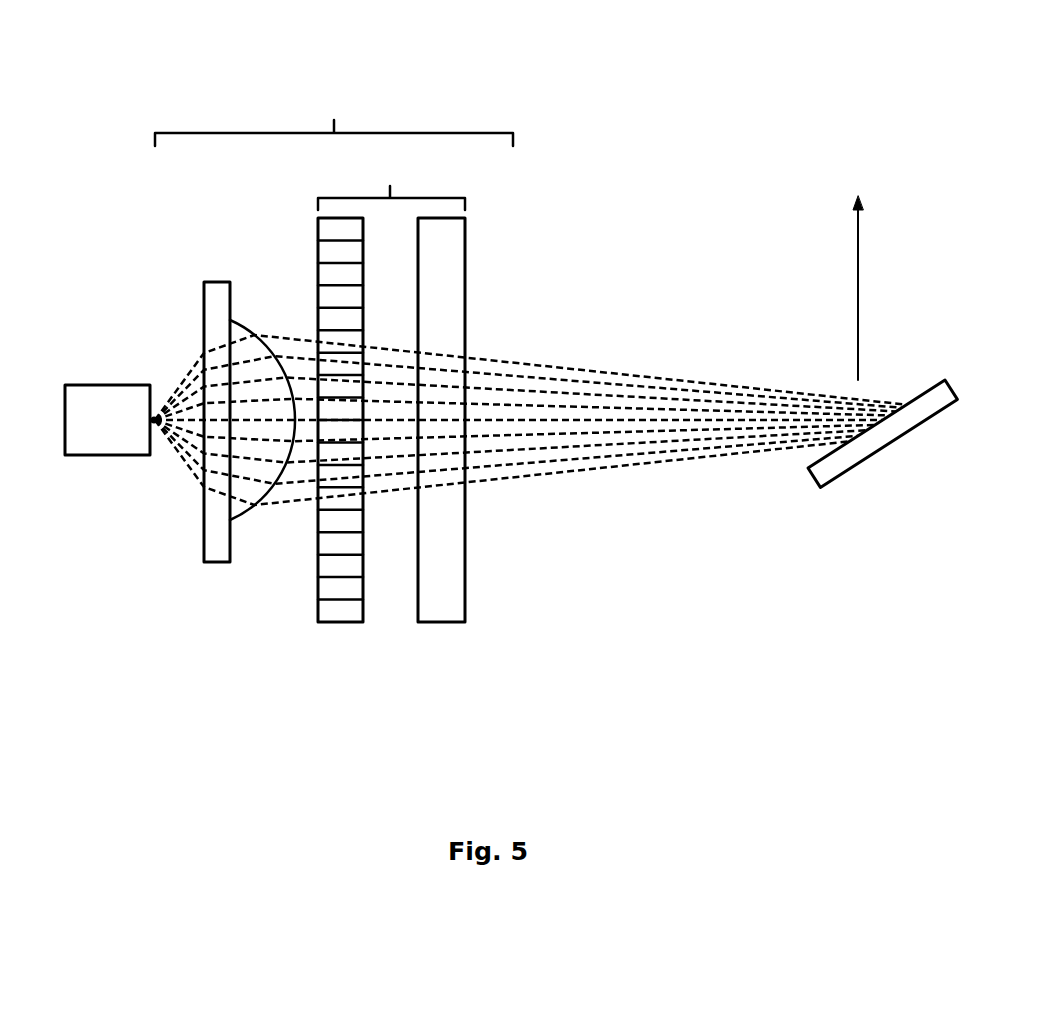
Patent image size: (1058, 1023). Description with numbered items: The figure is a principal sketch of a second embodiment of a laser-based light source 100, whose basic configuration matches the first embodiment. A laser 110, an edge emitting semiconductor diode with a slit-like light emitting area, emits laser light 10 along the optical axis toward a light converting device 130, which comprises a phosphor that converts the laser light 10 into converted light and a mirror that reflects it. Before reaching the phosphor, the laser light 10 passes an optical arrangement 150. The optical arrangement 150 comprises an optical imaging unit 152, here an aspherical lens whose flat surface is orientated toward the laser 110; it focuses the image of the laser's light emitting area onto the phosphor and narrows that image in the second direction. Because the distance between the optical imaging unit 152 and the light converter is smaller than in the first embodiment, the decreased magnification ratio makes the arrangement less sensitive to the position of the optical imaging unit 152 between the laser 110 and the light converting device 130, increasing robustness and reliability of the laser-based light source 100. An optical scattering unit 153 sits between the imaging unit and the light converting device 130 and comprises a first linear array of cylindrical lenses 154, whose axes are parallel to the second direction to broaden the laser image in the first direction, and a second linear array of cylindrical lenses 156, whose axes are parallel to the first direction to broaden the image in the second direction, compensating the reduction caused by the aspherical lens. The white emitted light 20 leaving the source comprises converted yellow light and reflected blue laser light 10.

The laser-based light source 100 is at (93, 114).
The optical arrangement 150 is at (334, 116).
The optical scattering unit 153 is at (391, 180).
The optical imaging unit 152 is at (215, 281).
The first linear array of cylindrical lenses 154 is at (341, 625).
The second linear array of cylindrical lenses 156 is at (445, 625).
The laser 110 is at (105, 442).
The laser light 10 is at (583, 473).
The light converting device 130 is at (893, 445).
The emitted light 20 is at (860, 295).